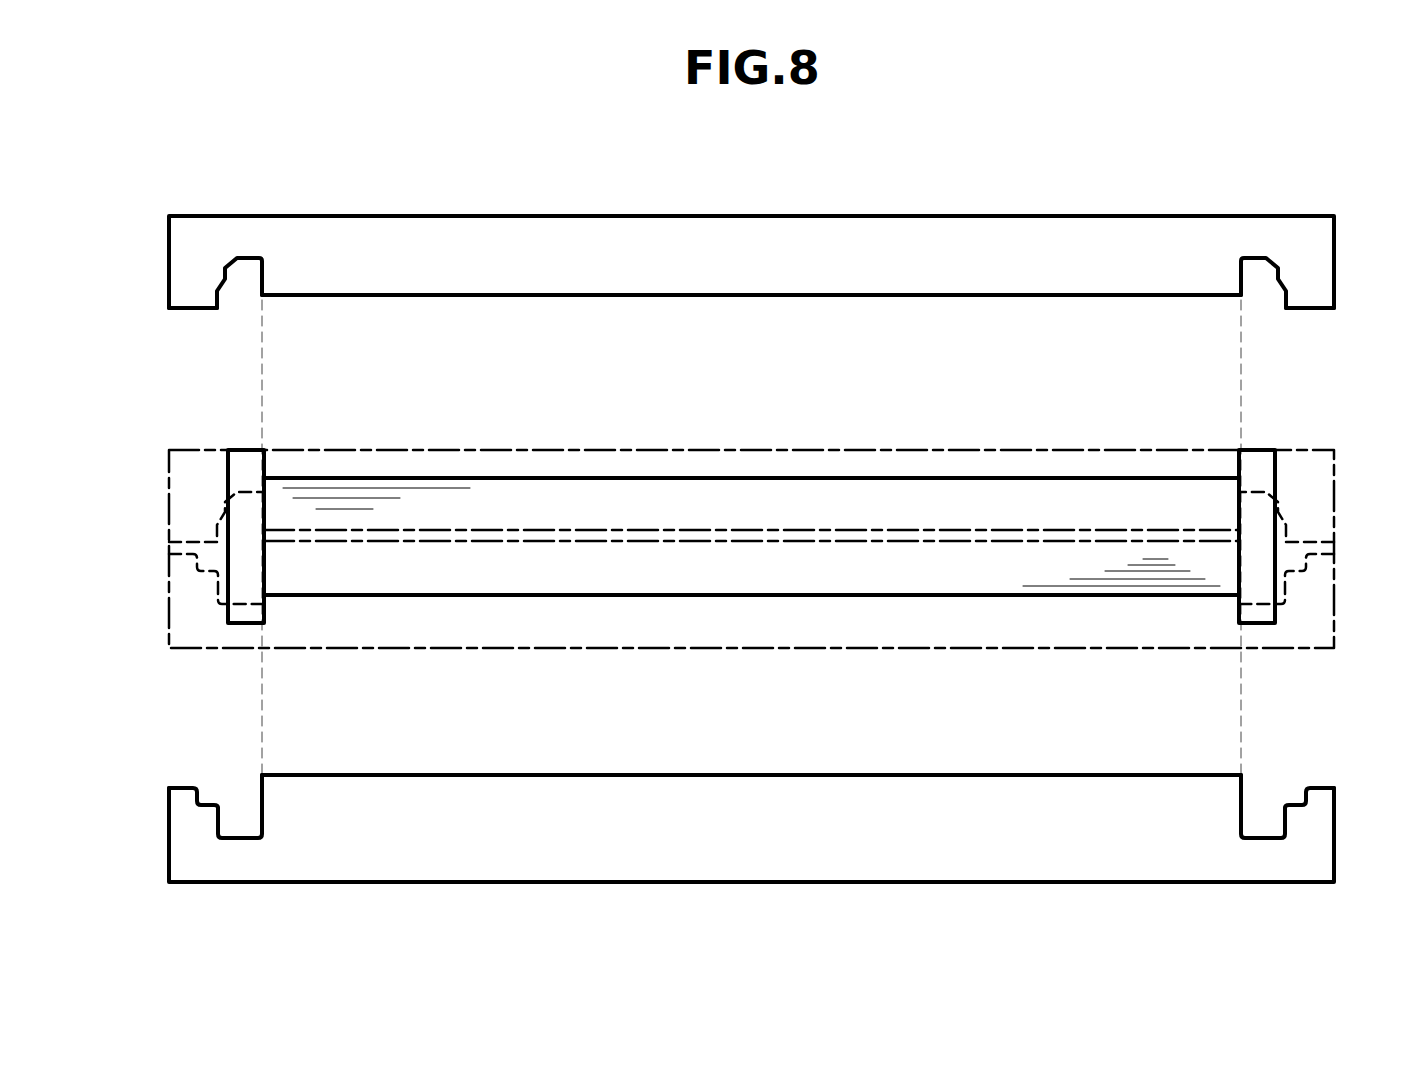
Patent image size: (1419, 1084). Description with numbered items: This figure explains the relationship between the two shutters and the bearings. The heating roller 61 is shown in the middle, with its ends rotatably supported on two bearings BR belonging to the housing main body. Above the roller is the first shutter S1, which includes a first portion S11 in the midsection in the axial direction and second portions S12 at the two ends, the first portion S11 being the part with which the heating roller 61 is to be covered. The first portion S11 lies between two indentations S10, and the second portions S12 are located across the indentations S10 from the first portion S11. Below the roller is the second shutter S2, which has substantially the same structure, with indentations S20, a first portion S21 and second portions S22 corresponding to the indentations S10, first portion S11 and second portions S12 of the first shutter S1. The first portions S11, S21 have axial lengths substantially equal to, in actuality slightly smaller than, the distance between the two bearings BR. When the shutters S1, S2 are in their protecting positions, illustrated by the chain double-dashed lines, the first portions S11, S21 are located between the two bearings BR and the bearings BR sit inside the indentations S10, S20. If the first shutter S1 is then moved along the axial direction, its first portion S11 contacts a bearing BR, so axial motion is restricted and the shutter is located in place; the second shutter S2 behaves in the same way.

The first shutter S1 is at (993, 437).
The indentations S10 is at (245, 272).
The first portion S11 is at (891, 278).
The second portions S12 is at (185, 263).
The second shutter S2 is at (1005, 662).
The indentations S20 is at (245, 816).
The first portion S21 is at (878, 790).
The second portions S22 is at (185, 833).
The bearings BR is at (235, 478).
The heating roller 61 is at (758, 597).